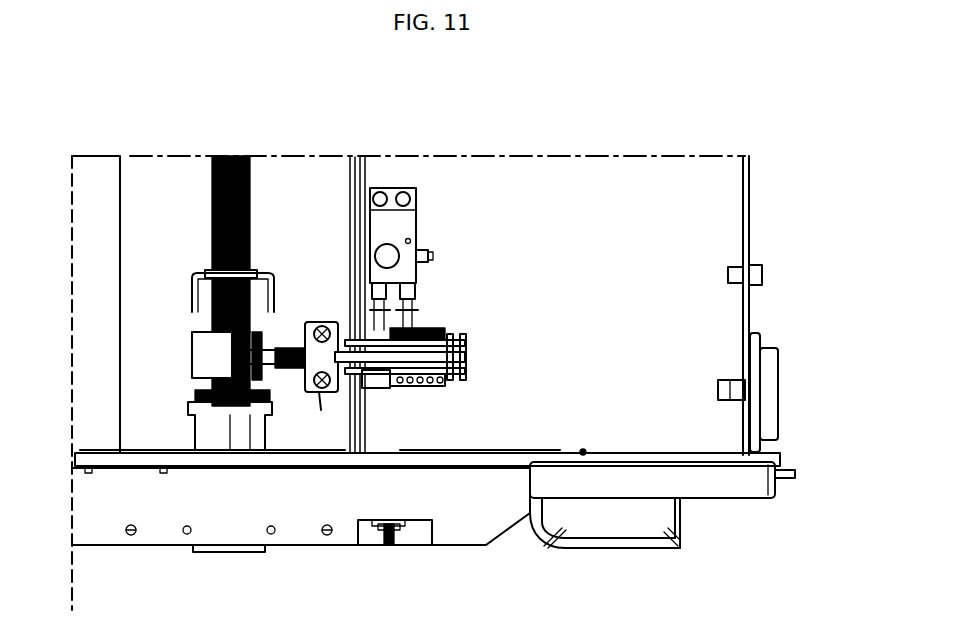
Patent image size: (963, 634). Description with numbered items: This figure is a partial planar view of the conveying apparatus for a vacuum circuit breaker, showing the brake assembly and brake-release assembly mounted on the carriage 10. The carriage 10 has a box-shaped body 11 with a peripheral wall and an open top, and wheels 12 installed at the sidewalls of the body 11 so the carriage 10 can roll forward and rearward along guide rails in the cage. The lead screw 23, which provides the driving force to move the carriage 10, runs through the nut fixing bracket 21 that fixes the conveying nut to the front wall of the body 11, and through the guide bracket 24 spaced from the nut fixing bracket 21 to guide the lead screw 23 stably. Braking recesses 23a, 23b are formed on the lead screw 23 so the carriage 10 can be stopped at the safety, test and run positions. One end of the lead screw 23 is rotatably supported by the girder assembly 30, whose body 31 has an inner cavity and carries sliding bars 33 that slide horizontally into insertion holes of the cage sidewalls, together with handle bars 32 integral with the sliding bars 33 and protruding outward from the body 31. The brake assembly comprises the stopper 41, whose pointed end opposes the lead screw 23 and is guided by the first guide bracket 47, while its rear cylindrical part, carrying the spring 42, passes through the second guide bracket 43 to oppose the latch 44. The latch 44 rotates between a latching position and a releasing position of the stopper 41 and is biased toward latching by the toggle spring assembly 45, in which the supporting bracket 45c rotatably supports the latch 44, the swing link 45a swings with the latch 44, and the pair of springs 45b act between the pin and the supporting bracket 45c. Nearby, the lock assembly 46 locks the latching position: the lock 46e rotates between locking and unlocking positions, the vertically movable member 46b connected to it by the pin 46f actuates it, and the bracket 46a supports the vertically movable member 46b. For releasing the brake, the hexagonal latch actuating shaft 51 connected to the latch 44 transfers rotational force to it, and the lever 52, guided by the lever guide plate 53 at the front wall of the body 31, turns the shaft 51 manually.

The carriage 10 is at (762, 246).
The body 11 is at (725, 208).
The wheels 12 is at (772, 368).
The nut fixing bracket 21 is at (200, 428).
The lead screw 23 is at (226, 156).
The braking recess 23a is at (215, 393).
The braking recess 23b is at (210, 272).
The guide bracket 24 is at (190, 278).
The girder assembly 30 is at (722, 502).
The body 31 is at (510, 548).
The handle bars 32 is at (603, 550).
The sliding bars 33 is at (790, 480).
The stopper 41 is at (215, 358).
The spring 42 is at (288, 345).
The second guide bracket 43 is at (314, 322).
The latch 44 is at (322, 393).
The toggle spring assembly 45 is at (452, 330).
The swing link 45a is at (466, 358).
The springs 45b is at (430, 388).
The supporting bracket 45c is at (382, 388).
The lock assembly 46 is at (422, 222).
The bracket 46a is at (416, 200).
The vertically movable member 46b is at (388, 250).
The lock 46e is at (416, 290).
The pin 46f is at (433, 256).
The first guide bracket 47 is at (215, 345).
The latch actuating shaft 51 is at (356, 168).
The lever 52 is at (390, 548).
The lever guide plate 53 is at (226, 505).